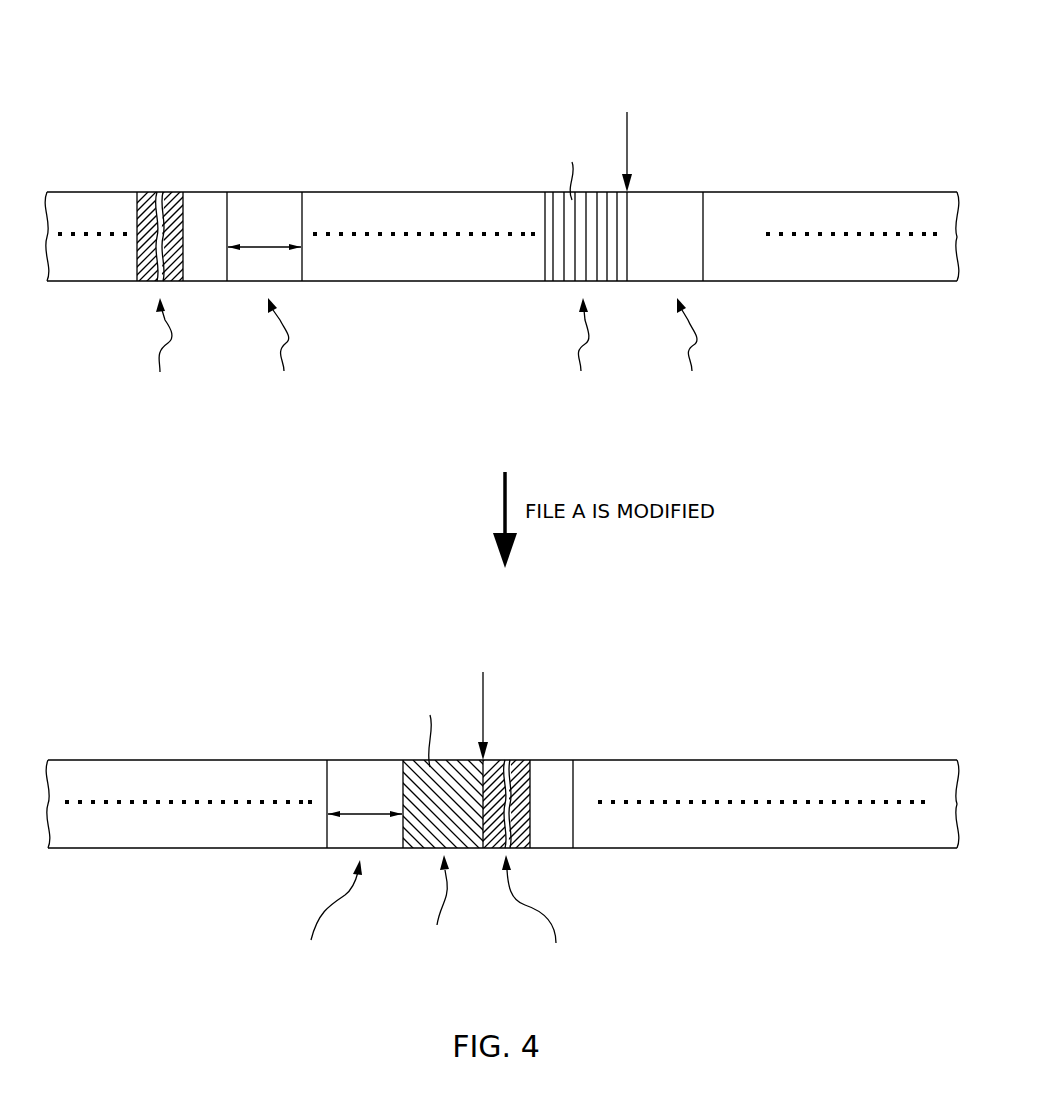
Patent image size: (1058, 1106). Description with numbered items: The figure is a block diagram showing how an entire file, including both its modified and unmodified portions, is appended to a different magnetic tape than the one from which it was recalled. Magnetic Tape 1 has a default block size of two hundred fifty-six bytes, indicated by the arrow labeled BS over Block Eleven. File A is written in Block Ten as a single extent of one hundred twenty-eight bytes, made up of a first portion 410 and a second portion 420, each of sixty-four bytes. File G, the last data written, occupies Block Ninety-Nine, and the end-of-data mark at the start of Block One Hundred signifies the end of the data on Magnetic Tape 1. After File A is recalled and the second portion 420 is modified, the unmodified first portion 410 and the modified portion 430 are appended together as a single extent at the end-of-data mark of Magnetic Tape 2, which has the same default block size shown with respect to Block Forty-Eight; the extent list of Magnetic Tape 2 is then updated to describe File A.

The Magnetic Tape 1 is at (848, 166).
The Magnetic Tape 2 is at (848, 733).
The first portion of File A 410 is at (146, 198).
The second portion of File A 420 is at (172, 197).
The modified portion 430 is at (522, 768).